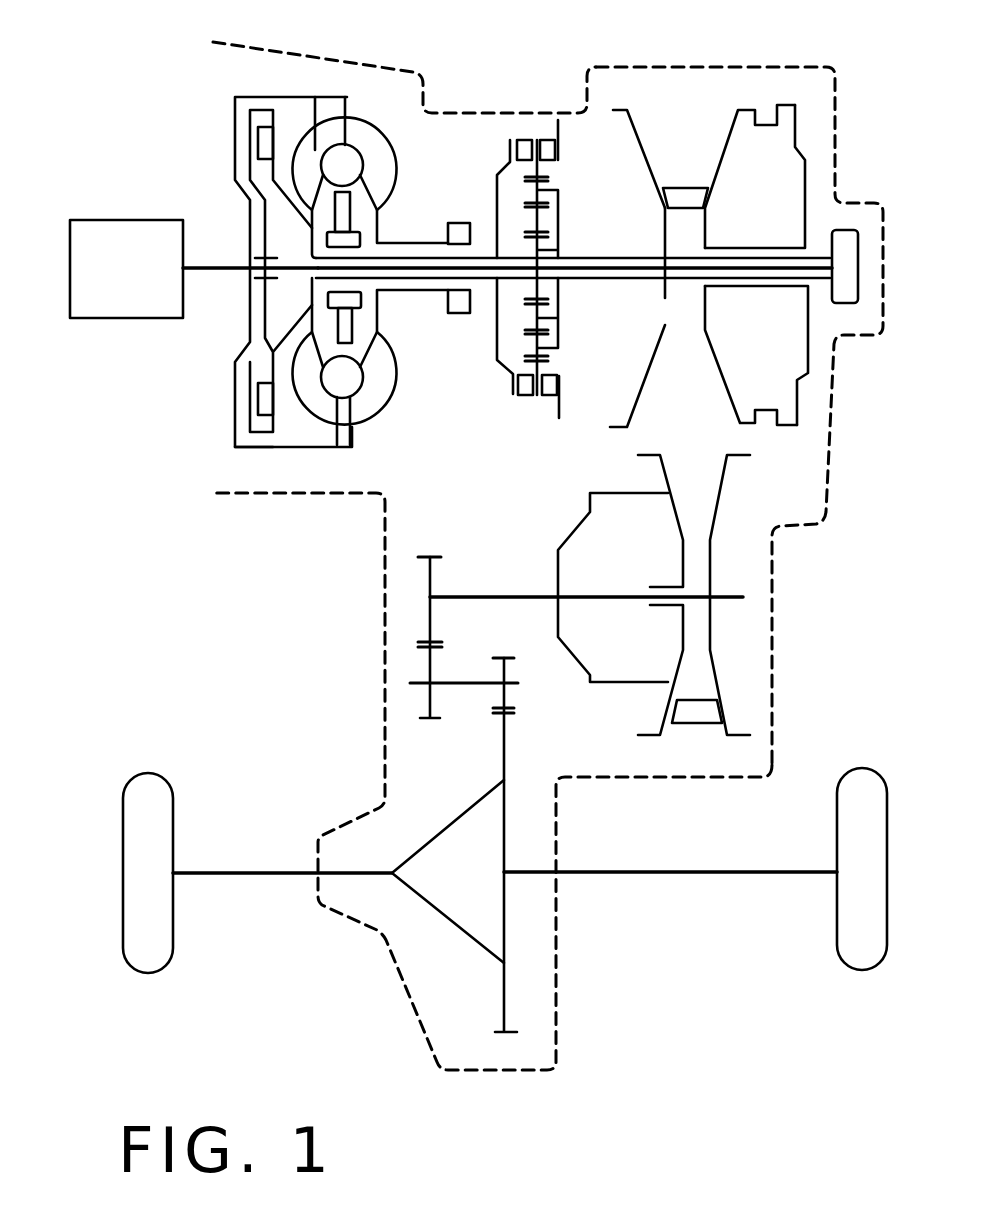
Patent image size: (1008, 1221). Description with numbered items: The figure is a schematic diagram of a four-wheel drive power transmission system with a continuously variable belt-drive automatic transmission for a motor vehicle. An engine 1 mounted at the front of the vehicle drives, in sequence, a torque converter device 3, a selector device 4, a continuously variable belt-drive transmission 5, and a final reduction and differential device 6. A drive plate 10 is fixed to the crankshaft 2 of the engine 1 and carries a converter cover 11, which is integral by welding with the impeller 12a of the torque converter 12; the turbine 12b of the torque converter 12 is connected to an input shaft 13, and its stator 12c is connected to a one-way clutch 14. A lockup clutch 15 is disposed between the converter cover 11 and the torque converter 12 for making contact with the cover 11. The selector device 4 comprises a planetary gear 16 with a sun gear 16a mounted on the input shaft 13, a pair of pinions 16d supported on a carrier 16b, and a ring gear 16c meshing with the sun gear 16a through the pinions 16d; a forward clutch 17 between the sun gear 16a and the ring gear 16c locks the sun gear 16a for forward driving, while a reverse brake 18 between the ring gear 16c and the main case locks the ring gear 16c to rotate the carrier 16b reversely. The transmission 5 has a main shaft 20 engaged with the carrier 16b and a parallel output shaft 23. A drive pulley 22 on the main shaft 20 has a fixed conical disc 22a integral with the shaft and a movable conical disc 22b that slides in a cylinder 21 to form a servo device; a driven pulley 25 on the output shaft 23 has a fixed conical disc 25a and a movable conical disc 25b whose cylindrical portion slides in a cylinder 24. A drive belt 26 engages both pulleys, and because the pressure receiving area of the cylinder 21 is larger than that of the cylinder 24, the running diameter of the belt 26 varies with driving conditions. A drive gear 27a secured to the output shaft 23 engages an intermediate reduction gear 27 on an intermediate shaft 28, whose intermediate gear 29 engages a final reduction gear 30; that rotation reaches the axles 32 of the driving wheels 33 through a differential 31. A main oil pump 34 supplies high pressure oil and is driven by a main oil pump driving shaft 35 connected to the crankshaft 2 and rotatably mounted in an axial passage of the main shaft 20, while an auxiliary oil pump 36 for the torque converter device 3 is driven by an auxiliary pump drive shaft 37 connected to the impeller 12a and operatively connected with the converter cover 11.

The engine 1 is at (164, 216).
The crankshaft 2 is at (228, 273).
The torque converter device 3 is at (358, 88).
The selector device 4 is at (483, 150).
The continuously variable belt-drive transmission 5 is at (704, 102).
The final reduction and differential device 6 is at (517, 843).
The drive plate 10 is at (248, 236).
The converter cover 11 is at (236, 181).
The torque converter 12 is at (400, 165).
The impeller 12a is at (368, 136).
The turbine 12b is at (322, 136).
The stator 12c is at (348, 340).
The input shaft 13 is at (487, 255).
The one-way clutch 14 is at (355, 303).
The lockup clutch 15 is at (260, 138).
The planetary gear 16 is at (600, 220).
The sun gear 16a is at (563, 253).
The carrier 16b is at (560, 207).
The ring gear 16c is at (537, 140).
The pinions 16d is at (545, 355).
The forward clutch 17 is at (525, 140).
The reverse brake 18 is at (556, 152).
The main shaft 20 is at (642, 280).
The cylinder 21 is at (759, 222).
The drive pulley 22 is at (678, 146).
The fixed conical disc 22a is at (645, 130).
The movable conical disc 22b is at (740, 420).
The output shaft 23 is at (517, 597).
The cylinder 24 is at (619, 564).
The driven pulley 25 is at (738, 521).
The fixed conical disc 25a is at (713, 655).
The movable conical disc 25b is at (668, 473).
The drive belt 26 is at (690, 195).
The intermediate reduction gear 27 is at (432, 721).
The drive gear 27a is at (418, 556).
The intermediate shaft 28 is at (457, 686).
The intermediate gear 29 is at (507, 657).
The final reduction gear 30 is at (497, 1032).
The differential 31 is at (472, 905).
The axles 32 is at (268, 876).
The driving wheels 33 is at (163, 820).
The main oil pump 34 is at (845, 305).
The main oil pump driving shaft 35 is at (778, 278).
The auxiliary oil pump 36 is at (460, 314).
The auxiliary pump drive shaft 37 is at (425, 243).